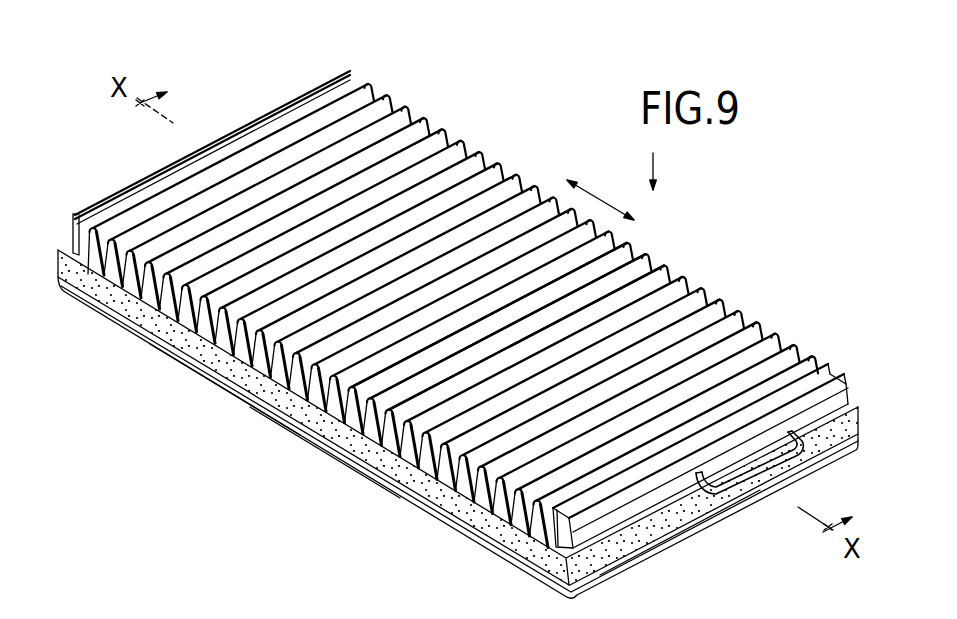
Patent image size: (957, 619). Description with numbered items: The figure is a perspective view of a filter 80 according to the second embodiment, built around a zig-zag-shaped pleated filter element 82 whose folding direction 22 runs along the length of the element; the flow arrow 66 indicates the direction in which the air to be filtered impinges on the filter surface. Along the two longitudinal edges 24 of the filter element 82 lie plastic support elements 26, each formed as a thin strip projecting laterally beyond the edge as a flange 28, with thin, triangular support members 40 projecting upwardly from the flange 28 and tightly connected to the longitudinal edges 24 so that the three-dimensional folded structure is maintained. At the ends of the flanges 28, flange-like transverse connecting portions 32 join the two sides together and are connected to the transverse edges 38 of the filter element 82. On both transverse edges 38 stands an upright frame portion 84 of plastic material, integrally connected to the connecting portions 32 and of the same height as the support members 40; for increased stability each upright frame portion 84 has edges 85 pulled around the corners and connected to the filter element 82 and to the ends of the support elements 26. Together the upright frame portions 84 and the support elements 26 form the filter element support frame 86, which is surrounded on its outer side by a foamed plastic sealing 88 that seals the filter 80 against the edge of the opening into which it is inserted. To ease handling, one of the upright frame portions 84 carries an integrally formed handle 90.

The folding direction 22 is at (600, 193).
The longitudinal edges 24 is at (447, 125).
The support elements 26 is at (458, 429).
The flange 28 is at (343, 457).
The connecting portions 32 is at (650, 557).
The transverse edges 38 is at (286, 95).
The support members 40 is at (440, 522).
The flow arrow 66 is at (653, 160).
The filter 80 is at (507, 140).
The filter element 82 is at (508, 235).
The upright frame portions 84 is at (137, 182).
The edges pulled around the corners 85 is at (72, 218).
The filter element support frame 86 is at (200, 380).
The foamed plastic sealing 88 is at (278, 410).
The handle 90 is at (772, 483).